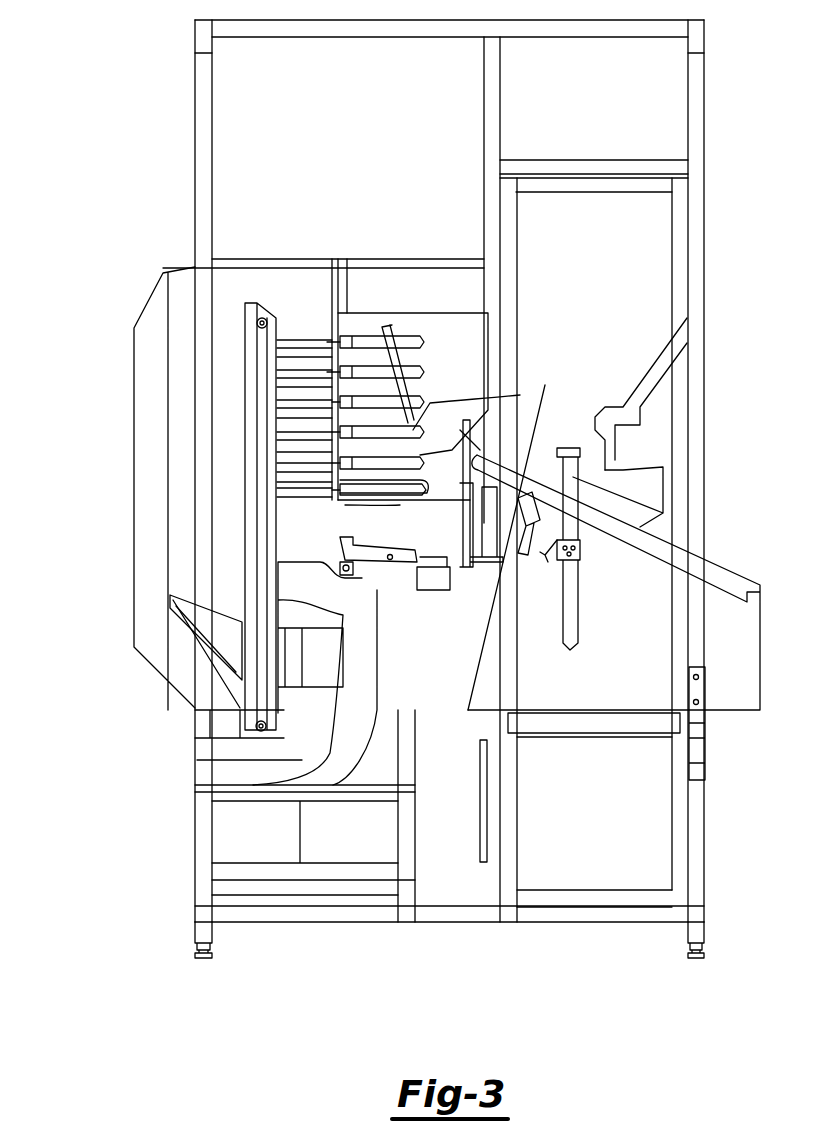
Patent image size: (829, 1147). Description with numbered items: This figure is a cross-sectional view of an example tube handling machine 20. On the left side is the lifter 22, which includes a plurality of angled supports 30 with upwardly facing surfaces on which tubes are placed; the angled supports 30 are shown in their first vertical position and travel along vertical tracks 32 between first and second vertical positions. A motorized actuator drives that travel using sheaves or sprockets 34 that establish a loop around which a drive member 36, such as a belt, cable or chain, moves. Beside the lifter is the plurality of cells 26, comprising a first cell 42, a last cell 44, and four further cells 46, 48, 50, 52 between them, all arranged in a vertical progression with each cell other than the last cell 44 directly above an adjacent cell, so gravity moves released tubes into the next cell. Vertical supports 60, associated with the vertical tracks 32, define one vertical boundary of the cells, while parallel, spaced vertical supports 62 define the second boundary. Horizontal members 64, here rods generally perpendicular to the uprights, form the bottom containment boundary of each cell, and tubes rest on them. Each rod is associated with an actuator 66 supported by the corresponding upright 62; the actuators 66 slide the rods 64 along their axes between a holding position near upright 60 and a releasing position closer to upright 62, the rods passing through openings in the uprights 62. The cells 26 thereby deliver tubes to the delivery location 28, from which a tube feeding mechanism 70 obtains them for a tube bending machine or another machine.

The tube handling machine 20 is at (153, 203).
The lifter 22 is at (200, 667).
The plurality of cells 26 is at (313, 415).
The delivery location 28 is at (415, 543).
The angled supports 30 is at (184, 600).
The vertical tracks 32 is at (237, 397).
The sheaves or sprockets 34 is at (262, 300).
The drive member 36 is at (254, 325).
The first cell 42 is at (300, 318).
The last cell 44 is at (287, 482).
The cell 46 is at (287, 452).
The cell 48 is at (287, 423).
The cell 50 is at (287, 387).
The cell 52 is at (287, 362).
The vertical supports 60 is at (278, 600).
The vertical supports 62 is at (333, 333).
The horizontal members 64 is at (283, 318).
The actuators 66 is at (430, 320).
The tube feeding mechanism 70 is at (543, 447).